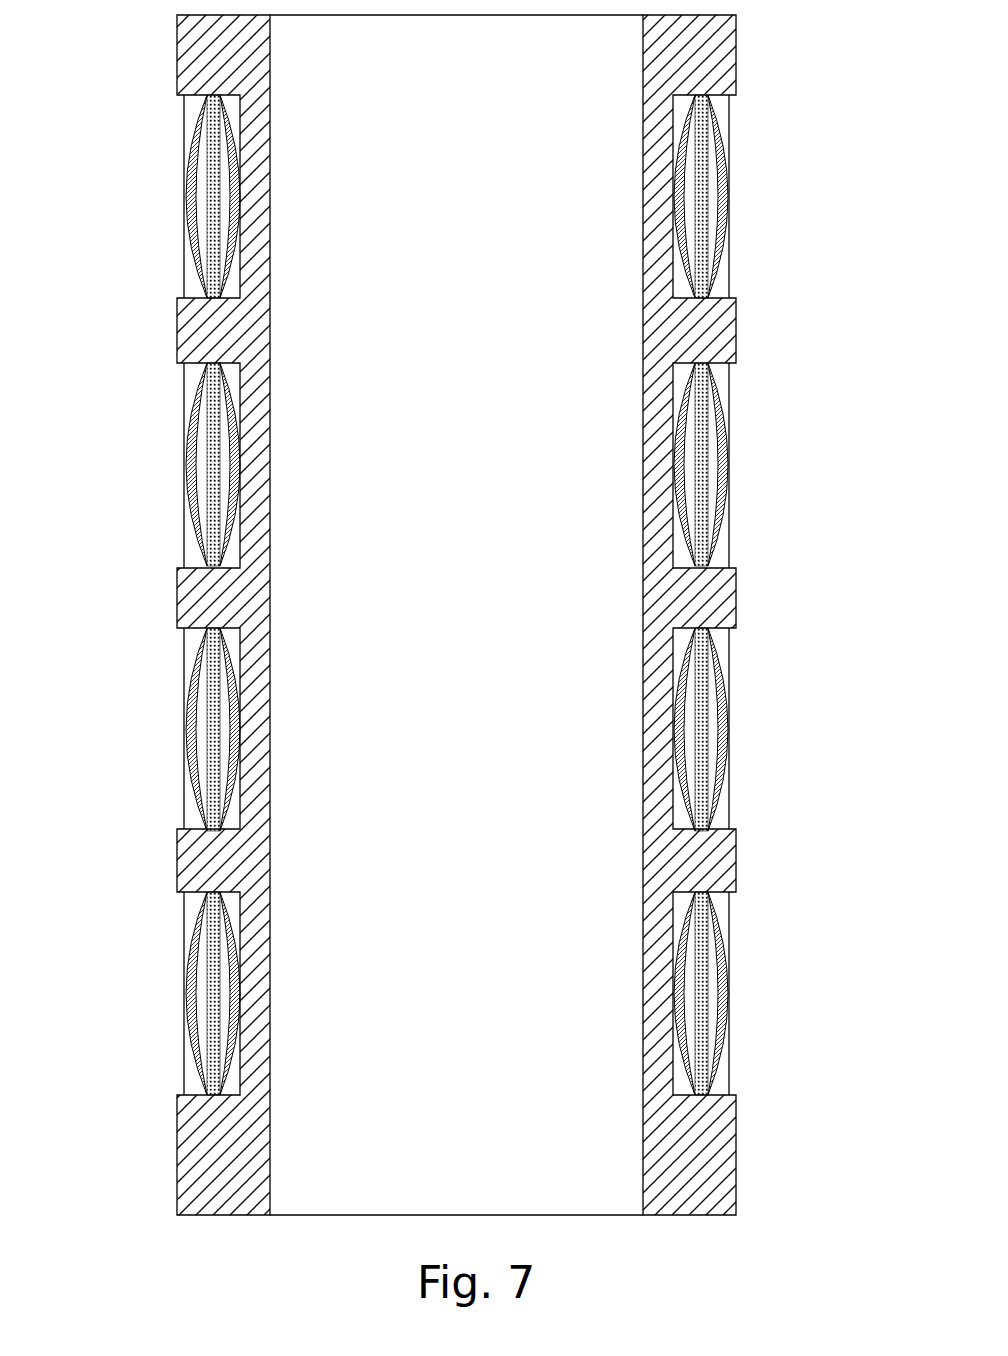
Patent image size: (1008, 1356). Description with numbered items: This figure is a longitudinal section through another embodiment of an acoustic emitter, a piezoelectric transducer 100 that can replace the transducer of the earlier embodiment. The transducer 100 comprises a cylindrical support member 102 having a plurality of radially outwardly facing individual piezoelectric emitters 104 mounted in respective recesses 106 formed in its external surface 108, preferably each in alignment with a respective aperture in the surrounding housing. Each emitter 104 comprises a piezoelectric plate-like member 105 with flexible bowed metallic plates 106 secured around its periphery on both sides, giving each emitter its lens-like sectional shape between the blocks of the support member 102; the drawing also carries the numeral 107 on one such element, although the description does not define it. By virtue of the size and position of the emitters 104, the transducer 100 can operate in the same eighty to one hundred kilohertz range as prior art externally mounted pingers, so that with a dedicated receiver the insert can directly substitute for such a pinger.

The piezoelectric transducer 100 is at (455, 615).
The cylindrical support member 102 is at (255, 867).
The piezoelectric emitter 104 is at (762, 178).
The piezoelectric plate-like member 105 is at (708, 462).
The flexible bowed metallic plate 106 is at (717, 671).
The actuator element 107 is at (192, 388).
The external surface 108 is at (737, 340).